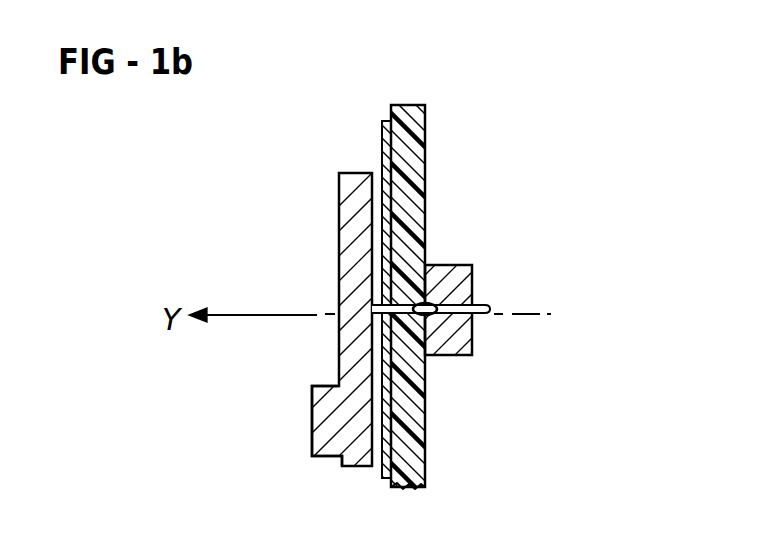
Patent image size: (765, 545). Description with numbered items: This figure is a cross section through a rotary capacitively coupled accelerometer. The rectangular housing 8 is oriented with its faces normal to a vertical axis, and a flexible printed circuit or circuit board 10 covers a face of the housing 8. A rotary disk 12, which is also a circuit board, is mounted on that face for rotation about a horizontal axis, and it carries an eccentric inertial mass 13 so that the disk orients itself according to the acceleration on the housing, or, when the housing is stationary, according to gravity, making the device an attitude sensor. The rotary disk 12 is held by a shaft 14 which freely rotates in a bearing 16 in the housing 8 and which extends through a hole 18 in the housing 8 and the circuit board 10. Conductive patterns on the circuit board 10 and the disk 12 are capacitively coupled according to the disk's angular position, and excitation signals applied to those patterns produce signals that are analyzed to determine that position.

The housing 8 is at (412, 105).
The circuit board 10 is at (386, 124).
The rotary disk 12 is at (342, 195).
The eccentric inertial mass 13 is at (322, 417).
The shaft 14 is at (483, 305).
The bearing 16 is at (460, 274).
The hole 18 is at (436, 302).